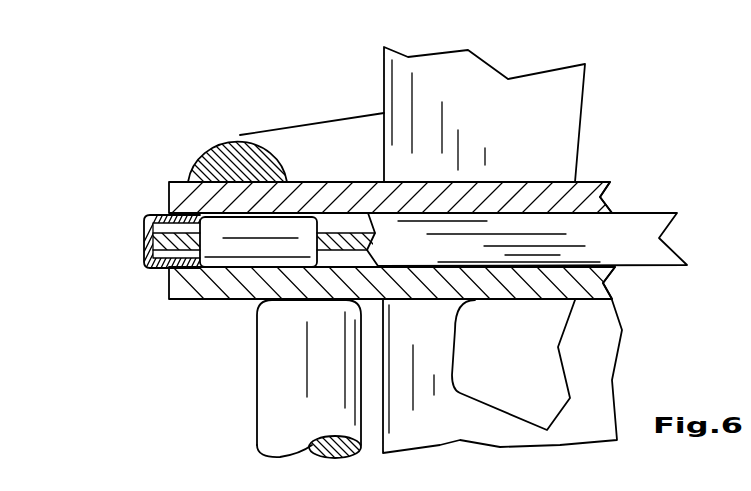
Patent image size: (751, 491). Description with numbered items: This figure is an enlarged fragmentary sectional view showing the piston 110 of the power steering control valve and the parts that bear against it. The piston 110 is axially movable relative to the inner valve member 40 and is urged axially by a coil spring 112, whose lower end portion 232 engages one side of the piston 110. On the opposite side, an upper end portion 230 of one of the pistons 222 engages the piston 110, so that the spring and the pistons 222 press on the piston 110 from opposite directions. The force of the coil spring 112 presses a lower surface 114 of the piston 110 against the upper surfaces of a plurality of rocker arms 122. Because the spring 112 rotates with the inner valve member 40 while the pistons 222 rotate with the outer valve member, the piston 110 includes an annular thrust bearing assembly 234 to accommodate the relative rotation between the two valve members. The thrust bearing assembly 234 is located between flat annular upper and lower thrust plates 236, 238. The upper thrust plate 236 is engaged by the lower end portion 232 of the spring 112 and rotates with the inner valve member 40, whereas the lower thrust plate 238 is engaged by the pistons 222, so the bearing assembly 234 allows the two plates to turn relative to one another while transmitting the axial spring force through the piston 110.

The inner valve member 40 is at (540, 127).
The piston 110 is at (364, 205).
The coil spring 112 is at (329, 152).
The lower surface 114 is at (212, 302).
The rocker arm 122 is at (517, 372).
The piston 222 is at (250, 407).
The upper end portion 230 is at (293, 332).
The lower end portion 232 is at (236, 166).
The thrust bearing assembly 234 is at (176, 265).
The upper thrust plate 236 is at (597, 180).
The lower thrust plate 238 is at (582, 278).